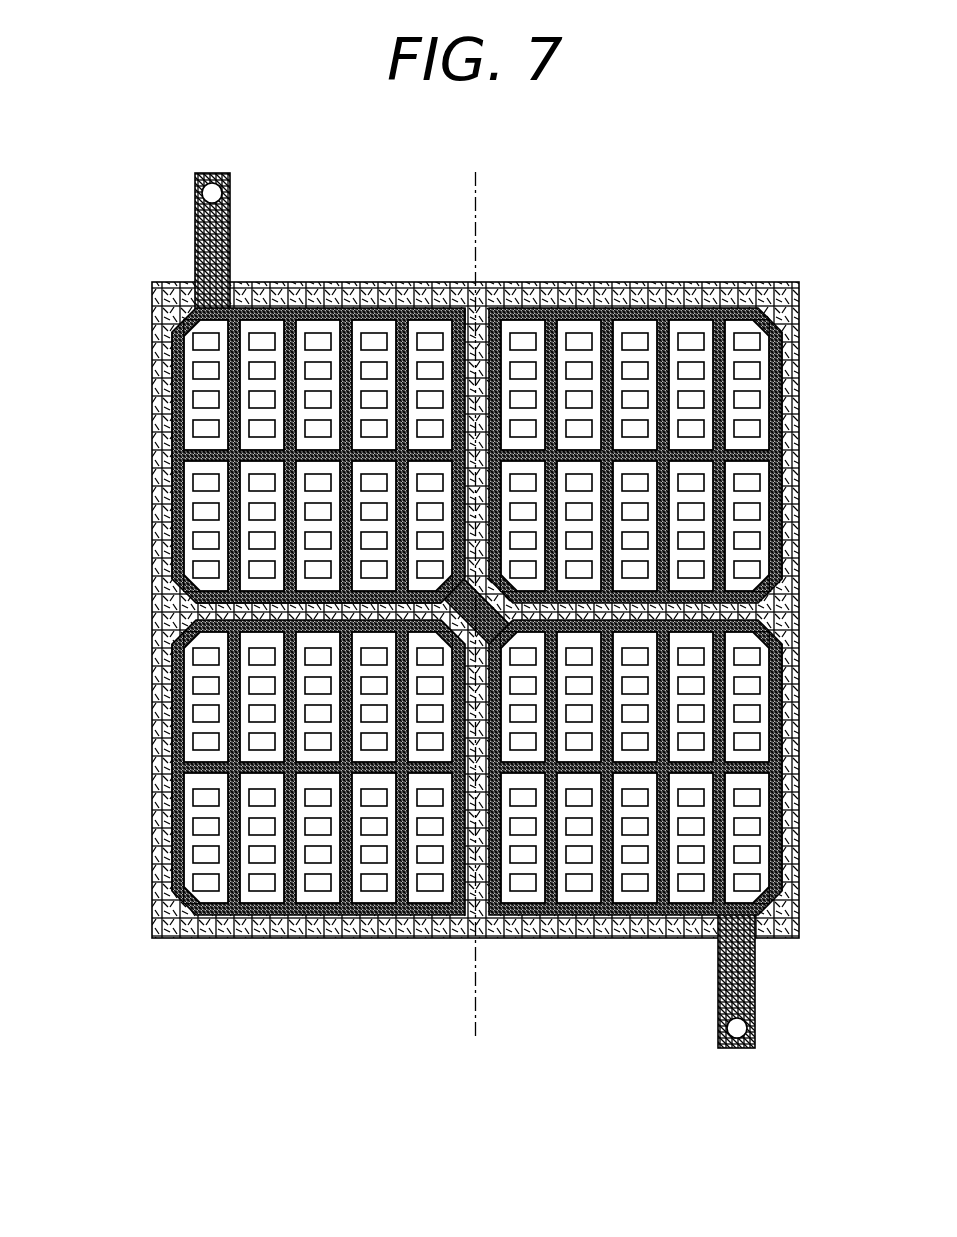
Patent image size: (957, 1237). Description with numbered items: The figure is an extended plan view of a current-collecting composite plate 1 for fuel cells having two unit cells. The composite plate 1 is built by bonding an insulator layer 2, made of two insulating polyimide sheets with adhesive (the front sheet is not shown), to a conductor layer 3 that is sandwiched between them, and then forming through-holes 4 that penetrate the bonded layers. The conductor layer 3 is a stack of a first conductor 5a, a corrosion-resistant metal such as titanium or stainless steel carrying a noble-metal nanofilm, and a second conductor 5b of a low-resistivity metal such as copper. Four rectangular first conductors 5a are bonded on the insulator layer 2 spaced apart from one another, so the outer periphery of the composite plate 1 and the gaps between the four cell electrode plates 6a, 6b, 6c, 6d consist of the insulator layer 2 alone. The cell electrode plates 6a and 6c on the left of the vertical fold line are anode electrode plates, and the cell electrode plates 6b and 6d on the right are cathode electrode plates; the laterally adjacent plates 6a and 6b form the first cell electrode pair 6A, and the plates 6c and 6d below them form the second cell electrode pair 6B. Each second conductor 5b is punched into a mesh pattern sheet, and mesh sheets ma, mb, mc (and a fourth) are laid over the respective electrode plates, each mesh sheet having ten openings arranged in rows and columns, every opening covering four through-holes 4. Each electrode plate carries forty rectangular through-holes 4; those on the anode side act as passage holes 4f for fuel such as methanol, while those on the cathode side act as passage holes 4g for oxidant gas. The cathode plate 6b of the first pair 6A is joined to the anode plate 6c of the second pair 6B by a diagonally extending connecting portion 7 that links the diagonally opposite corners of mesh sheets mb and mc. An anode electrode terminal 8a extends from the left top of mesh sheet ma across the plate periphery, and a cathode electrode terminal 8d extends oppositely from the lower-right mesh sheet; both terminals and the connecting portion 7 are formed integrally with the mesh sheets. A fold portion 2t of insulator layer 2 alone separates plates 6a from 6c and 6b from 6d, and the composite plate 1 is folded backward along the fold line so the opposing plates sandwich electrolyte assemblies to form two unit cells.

The current-collecting composite plate 1 is at (774, 226).
The insulator layer 2 is at (652, 281).
The fold portion 2t is at (467, 325).
The conductor layer 3 is at (868, 503).
The through-holes 4 is at (373, 326).
The passage holes for fuel 4f is at (200, 686).
The passage holes for oxidant gas 4g is at (748, 683).
The first conductor 5a is at (762, 525).
The second conductor 5b is at (785, 555).
The first cell electrode pair 6A is at (75, 315).
The second cell electrode pair 6B is at (75, 638).
The cell electrode plate 6a is at (272, 394).
The cell electrode plate 6b is at (683, 455).
The cell electrode plate 6c is at (275, 767).
The cell electrode plate 6d is at (681, 767).
The connecting portion 7 is at (420, 590).
The anode electrode terminal 8a is at (196, 237).
The cathode electrode terminal 8d is at (756, 980).
The mesh sheet ma is at (173, 412).
The mesh sheet mb is at (782, 415).
The mesh sheet mc is at (177, 800).